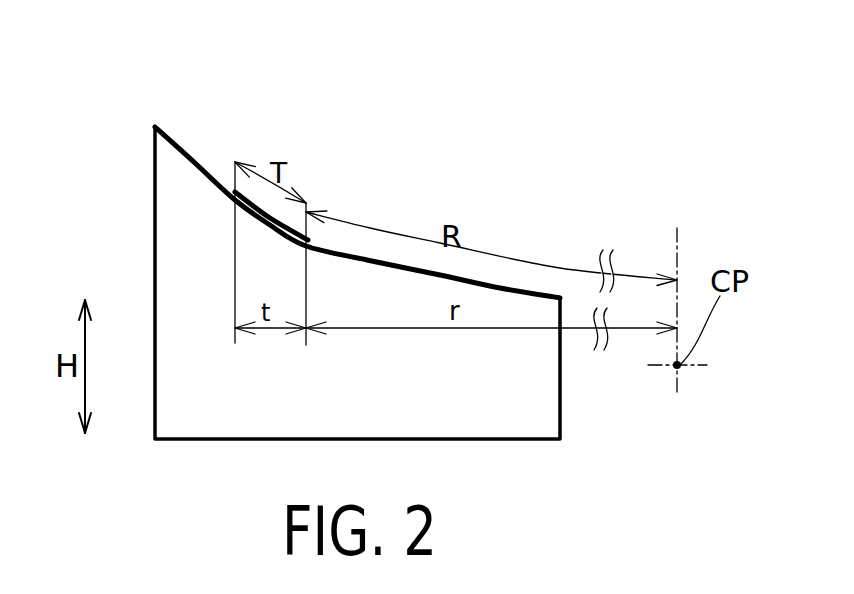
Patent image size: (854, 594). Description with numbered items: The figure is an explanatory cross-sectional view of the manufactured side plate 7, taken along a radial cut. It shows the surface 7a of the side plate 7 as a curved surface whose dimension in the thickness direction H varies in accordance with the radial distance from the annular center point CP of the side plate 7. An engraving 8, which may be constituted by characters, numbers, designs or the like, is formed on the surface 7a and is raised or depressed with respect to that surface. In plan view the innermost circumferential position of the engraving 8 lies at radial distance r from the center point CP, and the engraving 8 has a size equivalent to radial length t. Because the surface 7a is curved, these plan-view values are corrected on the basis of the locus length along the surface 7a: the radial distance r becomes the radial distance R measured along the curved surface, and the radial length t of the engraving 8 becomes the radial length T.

The side plate 7 is at (155, 183).
The surface of the side plate 7a is at (185, 158).
The engraving 8 is at (312, 240).